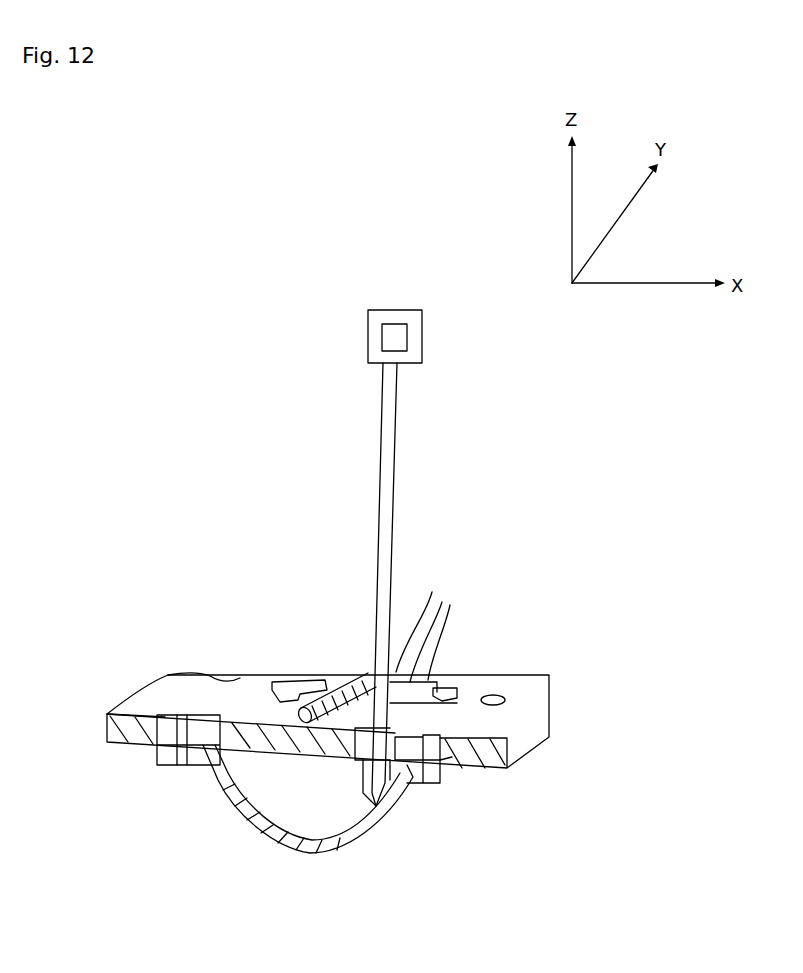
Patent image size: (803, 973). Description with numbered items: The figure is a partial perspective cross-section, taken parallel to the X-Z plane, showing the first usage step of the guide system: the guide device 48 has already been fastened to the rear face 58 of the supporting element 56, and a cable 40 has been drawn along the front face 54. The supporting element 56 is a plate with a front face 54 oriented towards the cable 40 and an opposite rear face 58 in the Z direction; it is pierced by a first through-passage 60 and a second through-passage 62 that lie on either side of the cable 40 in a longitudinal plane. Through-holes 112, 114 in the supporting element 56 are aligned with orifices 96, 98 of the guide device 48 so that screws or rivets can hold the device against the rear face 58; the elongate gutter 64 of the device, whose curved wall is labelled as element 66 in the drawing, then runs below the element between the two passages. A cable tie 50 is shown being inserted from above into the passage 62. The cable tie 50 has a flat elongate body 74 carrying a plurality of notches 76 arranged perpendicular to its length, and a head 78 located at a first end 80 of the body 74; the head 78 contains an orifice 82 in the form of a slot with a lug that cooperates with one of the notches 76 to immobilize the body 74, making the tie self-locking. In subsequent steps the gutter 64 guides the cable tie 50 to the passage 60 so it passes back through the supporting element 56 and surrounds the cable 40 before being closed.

The cable 40 is at (343, 678).
The guide device 48 is at (236, 810).
The cable tie 50 is at (400, 518).
The front face 54 is at (337, 673).
The supporting element 56 is at (167, 694).
The rear face 58 is at (157, 750).
The first through-passage 60 is at (229, 725).
The second through-passage 62 is at (432, 733).
The elongate gutter 64 is at (290, 828).
The strap inner surface 66 is at (254, 826).
The flat elongate body 74 is at (382, 427).
The notches 76 is at (428, 629).
The head 78 is at (418, 357).
The first end 80 is at (385, 372).
The orifice 82 is at (395, 336).
The orifice 96 is at (200, 766).
The orifice 98 is at (432, 784).
The through-hole 112 is at (163, 717).
The through-hole 114 is at (450, 758).